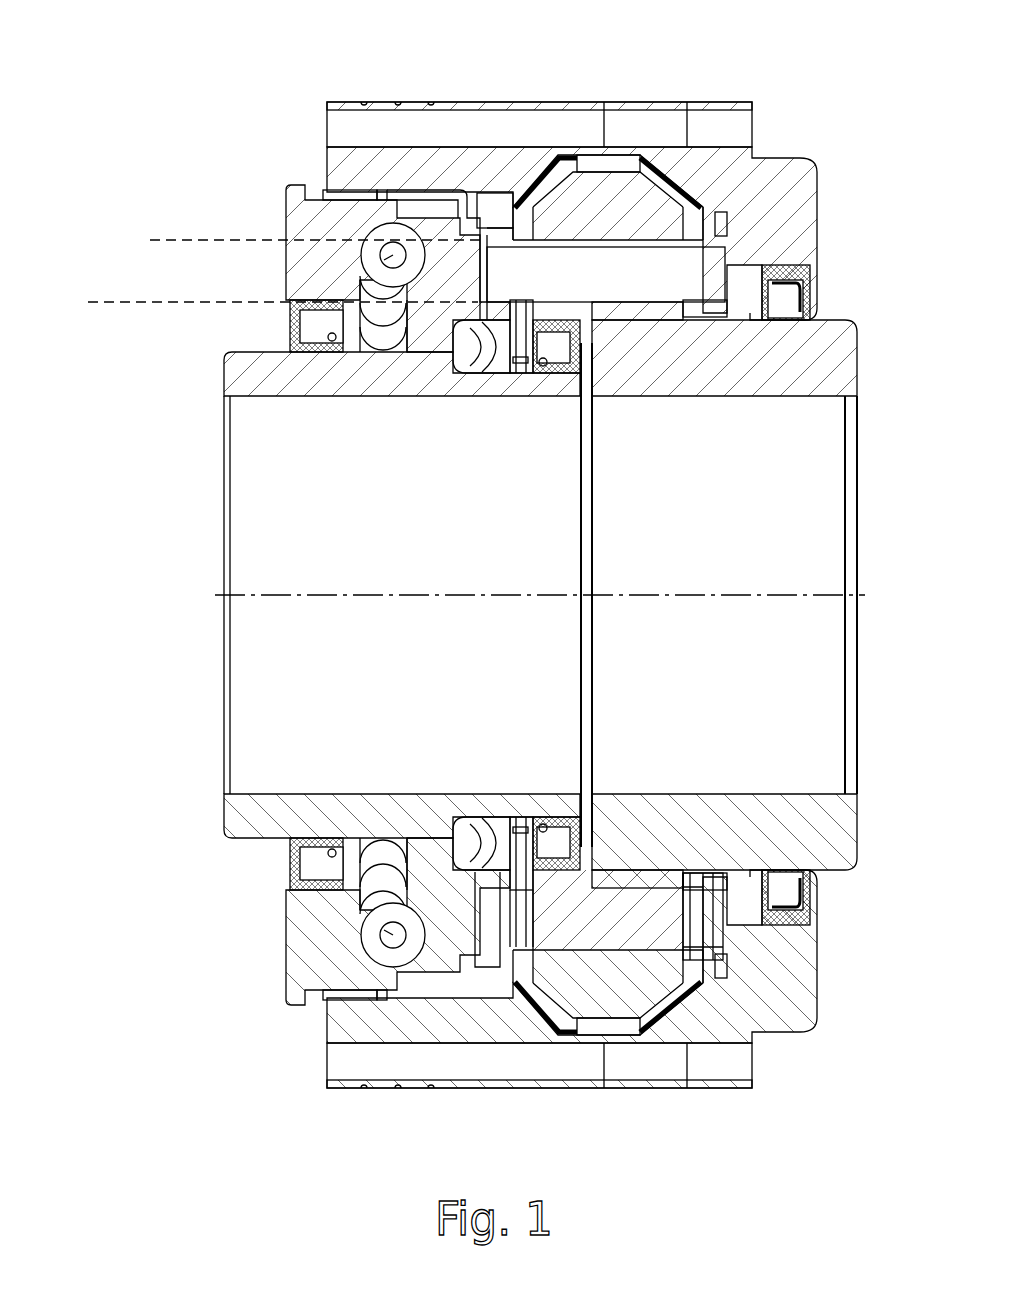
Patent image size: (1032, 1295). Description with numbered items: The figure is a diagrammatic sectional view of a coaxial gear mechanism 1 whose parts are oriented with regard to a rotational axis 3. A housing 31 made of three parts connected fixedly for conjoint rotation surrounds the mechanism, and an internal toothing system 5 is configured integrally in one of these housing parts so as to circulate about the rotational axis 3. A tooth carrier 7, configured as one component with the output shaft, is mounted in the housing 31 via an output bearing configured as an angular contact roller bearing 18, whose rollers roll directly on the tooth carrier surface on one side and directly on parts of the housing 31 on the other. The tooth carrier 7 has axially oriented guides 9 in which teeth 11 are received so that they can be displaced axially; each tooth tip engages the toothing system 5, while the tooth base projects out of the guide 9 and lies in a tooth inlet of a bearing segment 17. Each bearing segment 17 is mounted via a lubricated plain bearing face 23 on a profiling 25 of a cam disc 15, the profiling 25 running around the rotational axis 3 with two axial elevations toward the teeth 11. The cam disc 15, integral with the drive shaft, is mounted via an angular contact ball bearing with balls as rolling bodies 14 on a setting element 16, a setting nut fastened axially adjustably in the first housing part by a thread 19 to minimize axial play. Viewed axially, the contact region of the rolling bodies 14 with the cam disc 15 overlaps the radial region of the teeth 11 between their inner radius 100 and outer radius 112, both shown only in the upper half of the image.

The coaxial gear mechanism 1 is at (278, 66).
The rotational axis 3 is at (863, 597).
The toothing system 5 is at (728, 214).
The tooth carrier 7 is at (820, 362).
The guides 9 is at (630, 213).
The teeth 11 is at (717, 262).
The rolling bodies 14 is at (392, 257).
The cam disc 15 is at (307, 368).
The setting element 16 is at (297, 201).
The bearing segment 17 is at (481, 238).
The angular contact roller bearing 18 is at (542, 190).
The thread 19 is at (450, 205).
The plain bearing face 23 is at (483, 287).
The profiling 25 is at (483, 962).
The housing 31 is at (338, 163).
The inner radius 100 is at (88, 302).
The outer radius 112 is at (152, 240).